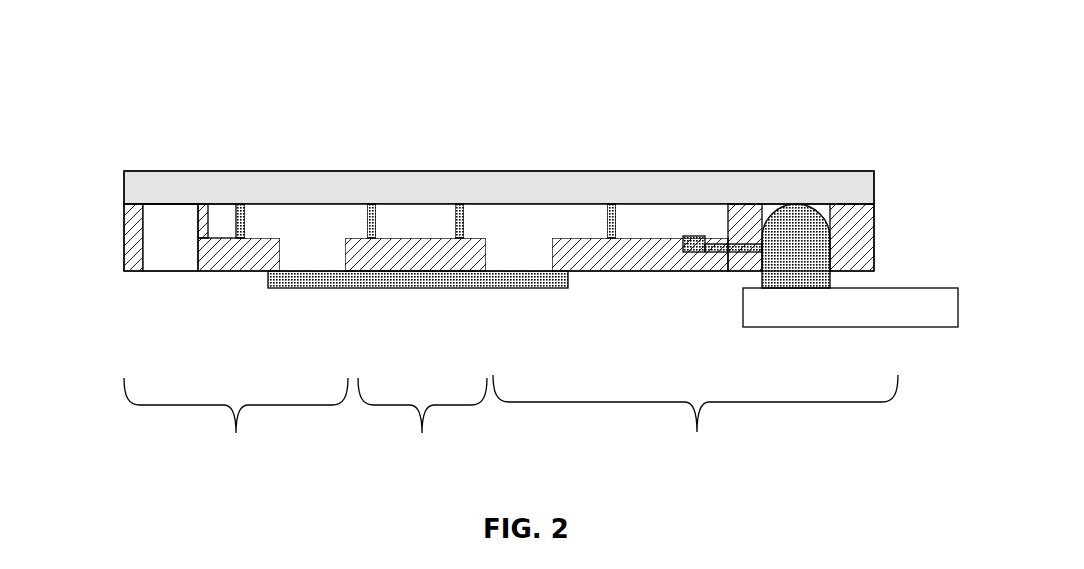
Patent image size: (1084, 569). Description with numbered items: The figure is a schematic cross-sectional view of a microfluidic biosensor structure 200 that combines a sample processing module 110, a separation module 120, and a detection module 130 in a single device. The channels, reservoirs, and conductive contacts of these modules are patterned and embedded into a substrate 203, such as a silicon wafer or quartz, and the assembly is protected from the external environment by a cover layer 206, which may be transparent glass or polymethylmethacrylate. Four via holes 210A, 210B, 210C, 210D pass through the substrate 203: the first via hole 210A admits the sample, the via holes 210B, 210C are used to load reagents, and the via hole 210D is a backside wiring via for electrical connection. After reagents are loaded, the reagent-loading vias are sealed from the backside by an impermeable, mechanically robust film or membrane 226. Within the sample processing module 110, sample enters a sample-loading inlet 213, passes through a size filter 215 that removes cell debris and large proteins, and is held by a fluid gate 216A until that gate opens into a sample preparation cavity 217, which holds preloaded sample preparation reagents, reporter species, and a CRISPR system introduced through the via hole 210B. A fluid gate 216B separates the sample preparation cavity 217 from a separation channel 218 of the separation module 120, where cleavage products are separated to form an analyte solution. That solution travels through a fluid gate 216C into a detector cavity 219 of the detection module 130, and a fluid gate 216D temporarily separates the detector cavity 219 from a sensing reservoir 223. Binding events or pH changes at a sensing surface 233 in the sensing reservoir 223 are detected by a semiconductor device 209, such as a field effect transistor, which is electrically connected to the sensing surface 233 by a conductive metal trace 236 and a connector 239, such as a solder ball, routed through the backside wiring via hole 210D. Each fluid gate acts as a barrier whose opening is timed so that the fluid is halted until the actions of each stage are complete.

The microfluidic biosensor structure 200 is at (231, 25).
The substrate 203 is at (124, 240).
The cover layer 206 is at (648, 171).
The semiconductor device 209 is at (944, 315).
The via hole 210A is at (163, 255).
The via hole 210B is at (315, 255).
The via hole 210C is at (515, 255).
The via hole 210D is at (824, 205).
The sample-loading inlet 213 is at (183, 230).
The size filter 215 is at (182, 204).
The fluid gate 216A is at (243, 203).
The fluid gate 216B is at (371, 204).
The fluid gate 216C is at (458, 204).
The fluid gate 216D is at (610, 204).
The sample preparation cavity 217 is at (333, 230).
The separation channel 218 is at (429, 230).
The detector cavity 219 is at (537, 230).
The sensing reservoir 223 is at (672, 230).
The film or membrane 226 is at (437, 288).
The sensing surface 233 is at (695, 236).
The conductive metal trace 236 is at (724, 247).
The connector 239 is at (820, 288).
The sample processing module 110 is at (253, 458).
The separation module 120 is at (439, 458).
The detection module 130 is at (684, 458).